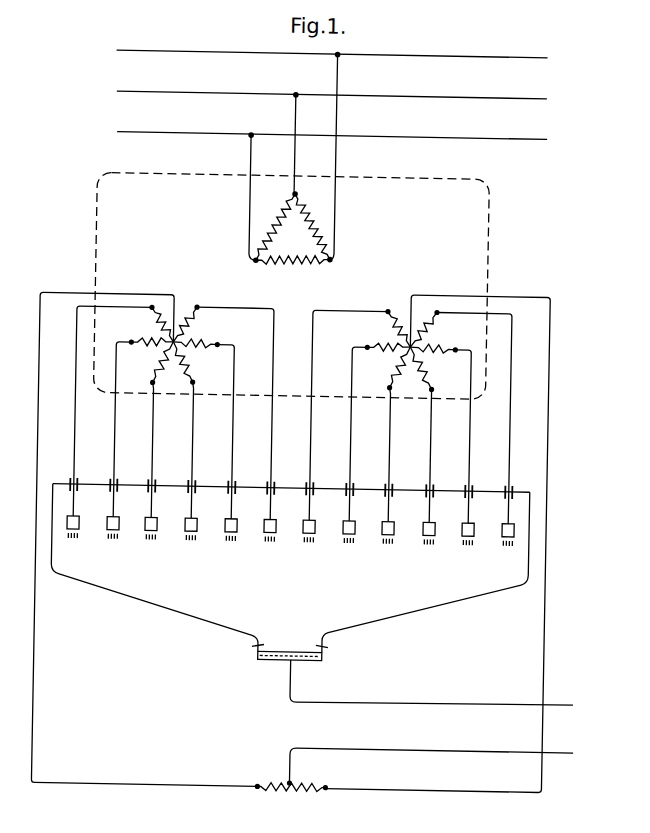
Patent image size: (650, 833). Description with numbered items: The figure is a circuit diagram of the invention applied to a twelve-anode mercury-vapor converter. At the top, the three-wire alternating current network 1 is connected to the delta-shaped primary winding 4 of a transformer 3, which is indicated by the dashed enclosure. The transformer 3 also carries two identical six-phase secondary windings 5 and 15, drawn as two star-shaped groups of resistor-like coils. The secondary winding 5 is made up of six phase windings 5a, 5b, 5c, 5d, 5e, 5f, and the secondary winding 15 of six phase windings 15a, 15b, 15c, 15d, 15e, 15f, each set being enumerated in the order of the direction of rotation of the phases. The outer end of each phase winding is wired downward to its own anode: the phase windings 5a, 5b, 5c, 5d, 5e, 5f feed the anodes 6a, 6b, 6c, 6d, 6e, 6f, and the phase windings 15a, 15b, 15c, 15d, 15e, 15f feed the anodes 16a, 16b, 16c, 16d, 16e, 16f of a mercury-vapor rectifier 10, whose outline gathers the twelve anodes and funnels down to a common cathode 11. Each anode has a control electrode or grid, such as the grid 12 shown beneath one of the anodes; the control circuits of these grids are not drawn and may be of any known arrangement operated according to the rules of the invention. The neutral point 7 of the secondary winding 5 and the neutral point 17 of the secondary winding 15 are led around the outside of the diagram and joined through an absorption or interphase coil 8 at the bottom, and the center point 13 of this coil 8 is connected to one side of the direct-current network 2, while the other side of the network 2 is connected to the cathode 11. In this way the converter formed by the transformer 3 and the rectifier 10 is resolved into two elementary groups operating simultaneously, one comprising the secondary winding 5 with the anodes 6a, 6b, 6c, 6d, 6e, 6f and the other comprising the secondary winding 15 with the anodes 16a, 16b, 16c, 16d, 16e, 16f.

The alternating current network 1 is at (549, 55).
The direct-current network 2 is at (580, 701).
The transformer 3 is at (486, 240).
The primary winding 4 is at (310, 224).
The secondary winding 5 is at (174, 339).
The phase winding 5a is at (155, 323).
The phase winding 5b is at (152, 349).
The phase winding 5c is at (156, 374).
The phase winding 5d is at (186, 376).
The phase winding 5e is at (197, 350).
The phase winding 5f is at (192, 321).
The anode 6a is at (75, 525).
The anode 6b is at (115, 525).
The anode 6c is at (153, 525).
The anode 6d is at (193, 525).
The anode 6e is at (233, 525).
The anode 6f is at (272, 525).
The neutral point 7 is at (168, 343).
The interphase coil 8 is at (289, 783).
The mercury-vapor rectifier 10 is at (136, 601).
The cathode 11 is at (277, 661).
The control electrode 12 is at (113, 545).
The center point 13 is at (291, 798).
The secondary winding 15 is at (413, 347).
The phase winding 15a is at (398, 324).
The phase winding 15b is at (388, 350).
The phase winding 15c is at (394, 376).
The phase winding 15d is at (425, 379).
The phase winding 15e is at (435, 352).
The phase winding 15f is at (428, 326).
The anode 16a is at (312, 526).
The anode 16b is at (352, 526).
The anode 16c is at (391, 526).
The anode 16d is at (432, 526).
The anode 16e is at (471, 526).
The anode 16f is at (511, 526).
The neutral point 17 is at (404, 346).